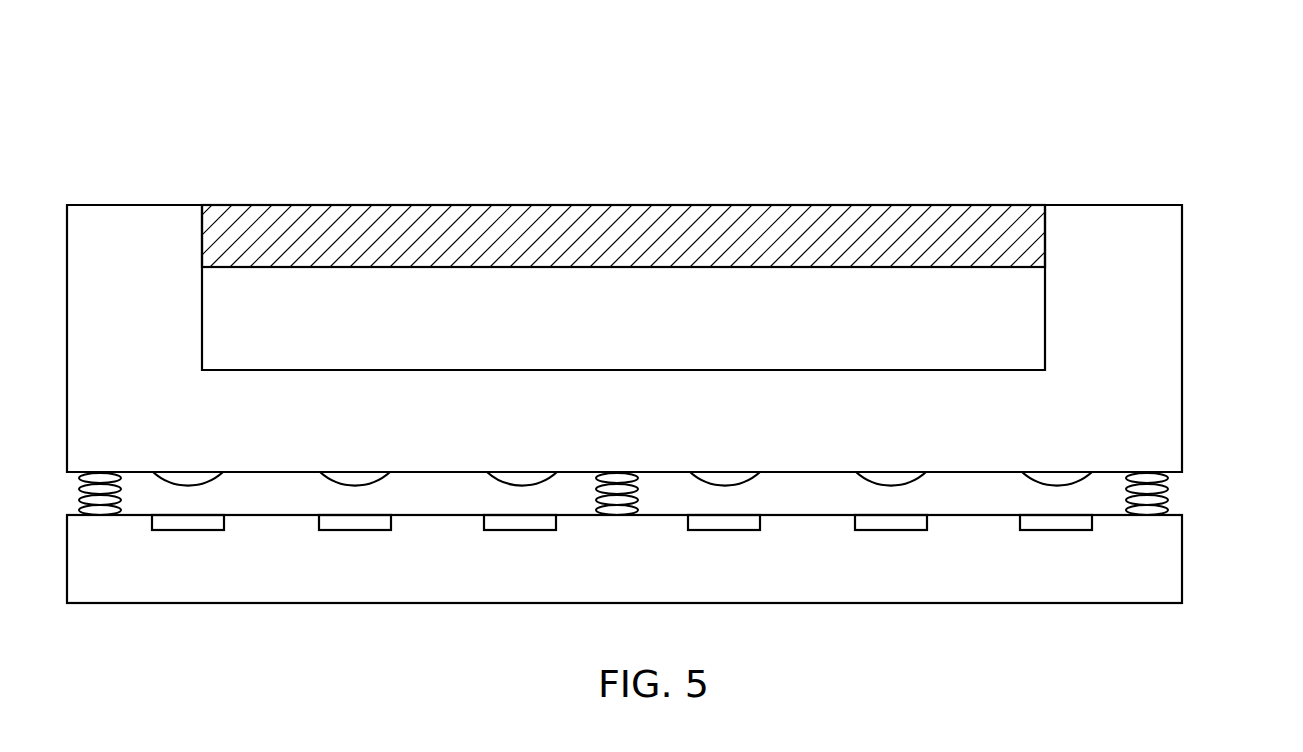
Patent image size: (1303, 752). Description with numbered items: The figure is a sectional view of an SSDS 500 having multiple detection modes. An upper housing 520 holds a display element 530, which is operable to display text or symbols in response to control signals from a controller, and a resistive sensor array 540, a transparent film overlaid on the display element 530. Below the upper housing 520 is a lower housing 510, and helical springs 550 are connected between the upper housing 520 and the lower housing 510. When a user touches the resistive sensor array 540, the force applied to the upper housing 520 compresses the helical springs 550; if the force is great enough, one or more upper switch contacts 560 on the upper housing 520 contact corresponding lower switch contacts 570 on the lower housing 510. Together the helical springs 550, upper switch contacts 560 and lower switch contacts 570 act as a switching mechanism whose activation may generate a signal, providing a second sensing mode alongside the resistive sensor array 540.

The SSDS 500 is at (1117, 76).
The lower housing 510 is at (1172, 564).
The upper housing 520 is at (1172, 333).
The display element 530 is at (797, 340).
The resistive sensor array 540 is at (780, 210).
The helical springs 550 is at (688, 494).
The upper switch contacts 560 is at (531, 462).
The lower switch contacts 570 is at (519, 542).